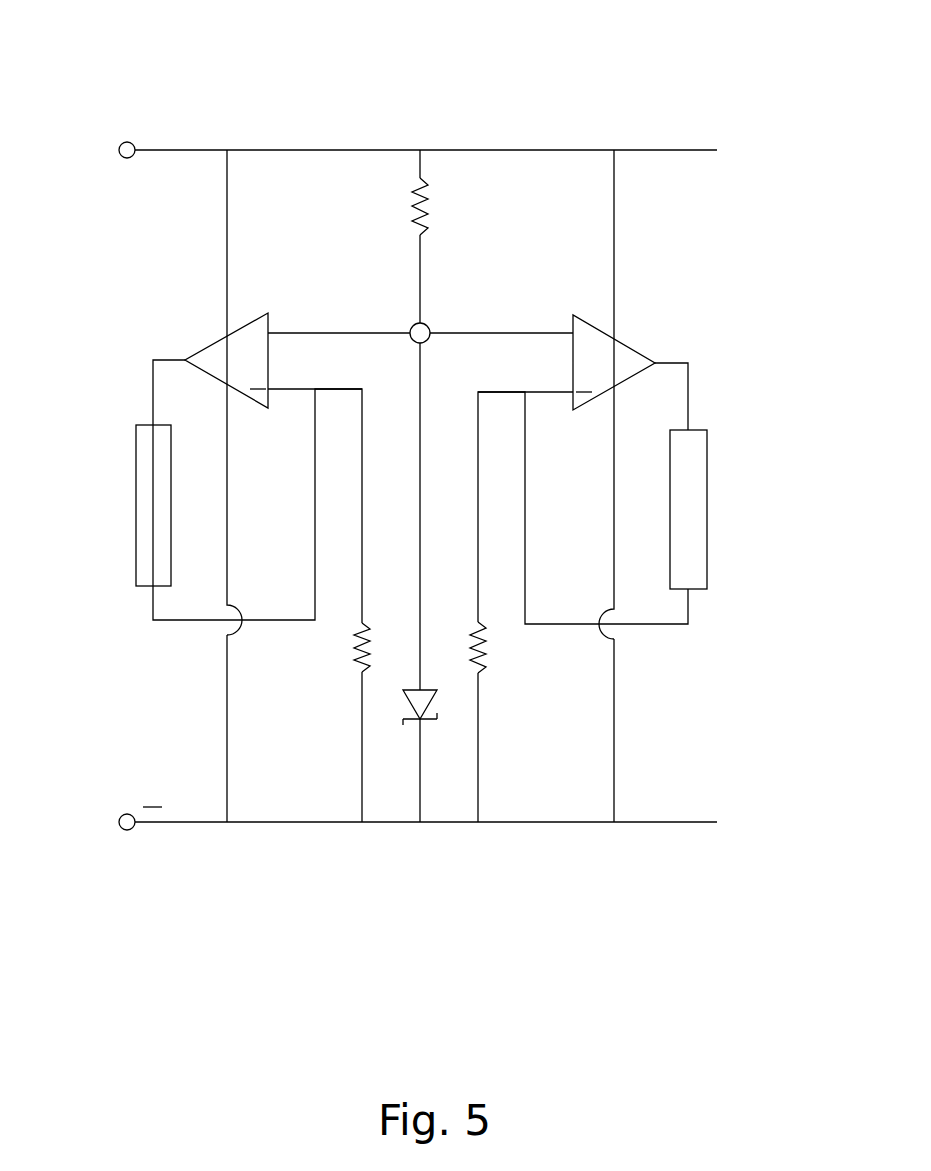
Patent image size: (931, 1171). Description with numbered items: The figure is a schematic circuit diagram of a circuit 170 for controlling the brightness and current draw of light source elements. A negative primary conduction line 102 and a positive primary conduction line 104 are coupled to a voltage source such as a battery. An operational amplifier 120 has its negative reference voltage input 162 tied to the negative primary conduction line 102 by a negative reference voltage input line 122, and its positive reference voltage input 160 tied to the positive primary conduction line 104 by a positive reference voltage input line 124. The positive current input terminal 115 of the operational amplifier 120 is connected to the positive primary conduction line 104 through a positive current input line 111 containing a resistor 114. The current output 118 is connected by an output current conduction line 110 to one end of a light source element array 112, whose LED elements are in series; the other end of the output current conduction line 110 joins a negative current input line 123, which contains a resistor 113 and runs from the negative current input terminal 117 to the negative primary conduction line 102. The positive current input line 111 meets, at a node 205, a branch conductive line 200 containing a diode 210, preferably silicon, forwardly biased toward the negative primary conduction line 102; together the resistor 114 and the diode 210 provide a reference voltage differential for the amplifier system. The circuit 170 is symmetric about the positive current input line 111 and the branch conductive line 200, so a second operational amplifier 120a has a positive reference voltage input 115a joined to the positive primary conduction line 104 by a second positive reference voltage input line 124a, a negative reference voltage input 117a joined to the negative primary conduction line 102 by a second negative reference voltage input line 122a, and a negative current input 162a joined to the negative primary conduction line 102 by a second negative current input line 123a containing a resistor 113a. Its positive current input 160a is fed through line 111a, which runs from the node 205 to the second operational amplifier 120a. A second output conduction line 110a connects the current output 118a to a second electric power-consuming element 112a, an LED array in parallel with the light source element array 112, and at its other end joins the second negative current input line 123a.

The negative primary conduction line 102 is at (282, 823).
The positive primary conduction line 104 is at (192, 149).
The output current conduction line 110 is at (153, 390).
The second output conduction line 110a is at (688, 397).
The positive current input line 111 is at (420, 273).
The second positive current input line portion 111a is at (470, 340).
The light source element array 112 is at (145, 514).
The second electric power-consuming element 112a is at (695, 525).
The resistor 113 is at (356, 672).
The resistor 113a is at (485, 662).
The resistor 114 is at (426, 200).
The positive current input terminal 115 is at (284, 322).
The positive reference voltage input 115a is at (612, 340).
The negative current input terminal 117 is at (270, 390).
The negative reference voltage input 117a is at (600, 392).
The current output 118 is at (185, 360).
The current output 118a is at (655, 363).
The operational amplifier 120 is at (215, 353).
The second operational amplifier 120a is at (625, 357).
The negative reference voltage input line 122 is at (227, 735).
The second negative reference voltage input line 122a is at (614, 720).
The negative current input line 123 is at (377, 490).
The second negative current input line 123a is at (478, 743).
The positive reference voltage input line 124 is at (227, 185).
The second positive reference voltage input line 124a is at (614, 208).
The positive reference voltage input 160 is at (226, 333).
The positive current input 160a is at (573, 333).
The negative reference voltage input 162 is at (222, 388).
The negative current input 162a is at (570, 395).
The circuit 170 is at (736, 118).
The branch conductive line 200 is at (425, 510).
The node 205 is at (430, 327).
The diode 210 is at (436, 722).